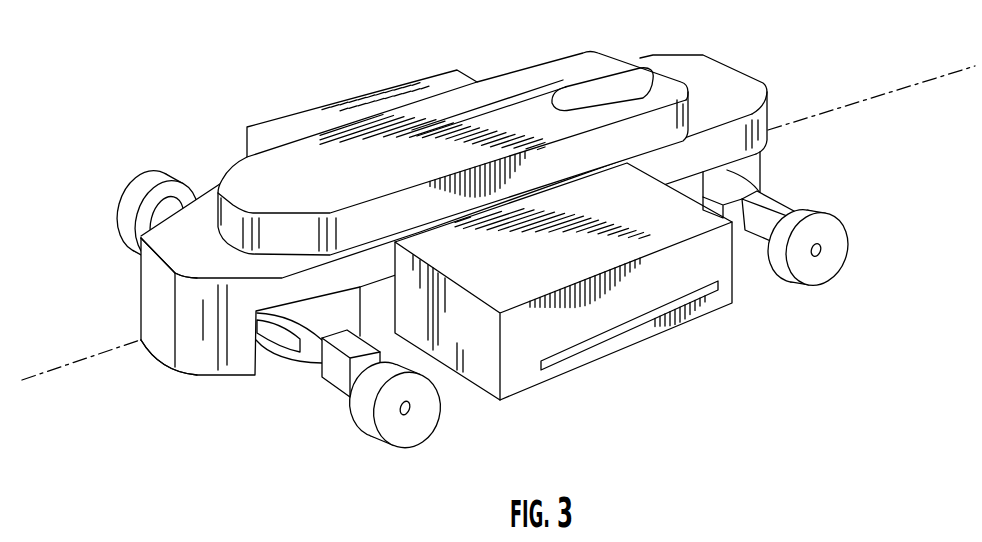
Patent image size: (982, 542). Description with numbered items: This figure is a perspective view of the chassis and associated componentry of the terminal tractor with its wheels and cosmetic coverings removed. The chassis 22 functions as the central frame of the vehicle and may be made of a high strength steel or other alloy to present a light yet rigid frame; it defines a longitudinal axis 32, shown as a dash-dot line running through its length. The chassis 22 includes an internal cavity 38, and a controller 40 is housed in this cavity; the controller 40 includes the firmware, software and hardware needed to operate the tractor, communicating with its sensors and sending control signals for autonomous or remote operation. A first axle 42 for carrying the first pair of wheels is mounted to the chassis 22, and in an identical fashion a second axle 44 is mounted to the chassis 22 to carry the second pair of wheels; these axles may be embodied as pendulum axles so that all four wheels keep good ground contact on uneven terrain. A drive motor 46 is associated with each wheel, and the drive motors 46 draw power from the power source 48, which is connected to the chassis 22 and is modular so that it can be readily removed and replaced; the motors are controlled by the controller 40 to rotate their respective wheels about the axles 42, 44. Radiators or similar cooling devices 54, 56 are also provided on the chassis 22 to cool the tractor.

The chassis 22 is at (440, 200).
The longitudinal axis 32 is at (113, 353).
The internal cavity 38 is at (453, 128).
The controller 40 is at (616, 84).
The first axle 42 is at (344, 384).
The second axle 44 is at (754, 245).
The drive motor 46 is at (153, 176).
The power source 48 is at (620, 350).
The cooling device 54 is at (764, 83).
The cooling device 56 is at (140, 275).